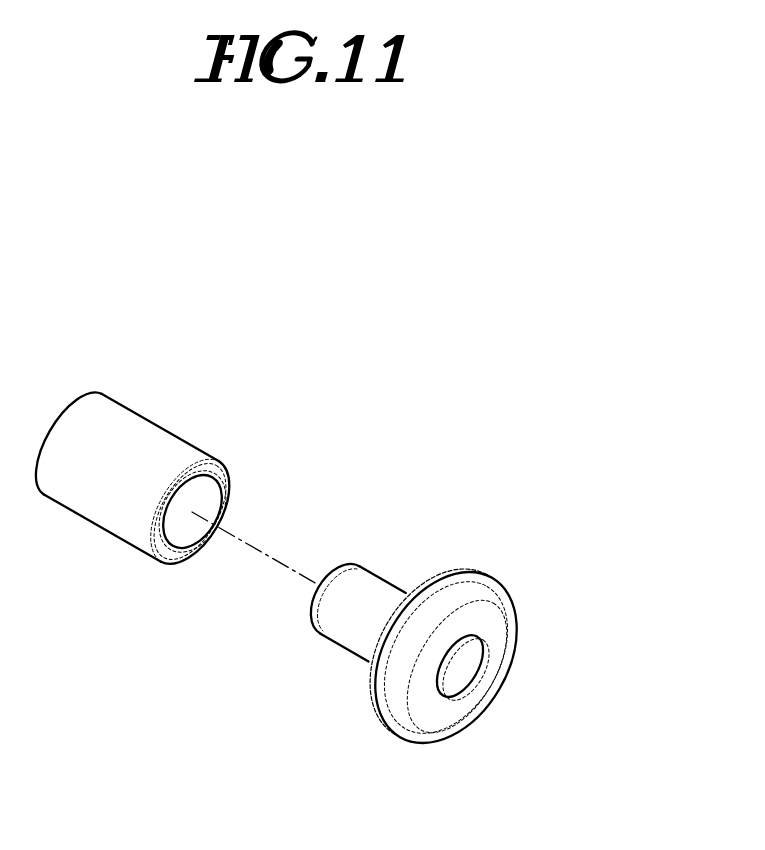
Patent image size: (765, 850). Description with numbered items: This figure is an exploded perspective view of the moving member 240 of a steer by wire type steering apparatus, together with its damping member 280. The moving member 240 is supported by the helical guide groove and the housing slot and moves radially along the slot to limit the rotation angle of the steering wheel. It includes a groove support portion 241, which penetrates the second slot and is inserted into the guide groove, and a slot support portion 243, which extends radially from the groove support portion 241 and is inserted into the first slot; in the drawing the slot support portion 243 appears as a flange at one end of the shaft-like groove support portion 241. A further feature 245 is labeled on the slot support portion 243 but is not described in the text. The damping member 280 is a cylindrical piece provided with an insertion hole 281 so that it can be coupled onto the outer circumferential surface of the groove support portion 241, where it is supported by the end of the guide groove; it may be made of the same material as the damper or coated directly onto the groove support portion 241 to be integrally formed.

The moving member 240 is at (482, 546).
The groove support portion 241 is at (373, 590).
The slot support portion 243 is at (493, 662).
The through hole of bushing 245 is at (465, 682).
The damping member 280 is at (98, 498).
The insertion hole 281 is at (207, 500).